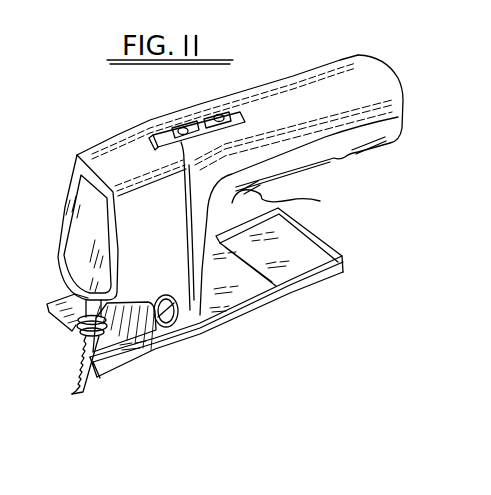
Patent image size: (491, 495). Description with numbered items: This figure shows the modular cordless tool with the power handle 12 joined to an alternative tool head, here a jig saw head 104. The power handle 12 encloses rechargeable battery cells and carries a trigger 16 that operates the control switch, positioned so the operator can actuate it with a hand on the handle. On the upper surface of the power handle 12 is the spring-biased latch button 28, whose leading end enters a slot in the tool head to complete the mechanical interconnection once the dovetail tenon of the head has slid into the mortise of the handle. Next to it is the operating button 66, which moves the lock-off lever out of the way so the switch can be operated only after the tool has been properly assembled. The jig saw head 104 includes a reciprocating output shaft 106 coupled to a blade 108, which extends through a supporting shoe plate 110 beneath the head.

The power handle 12 is at (292, 93).
The trigger 16 is at (324, 194).
The latch button 28 is at (180, 133).
The operating button 66 is at (227, 117).
The jig saw head 104 is at (56, 96).
The reciprocating output shaft 106 is at (15, 252).
The blade 108 is at (80, 397).
The shoe plate 110 is at (262, 297).